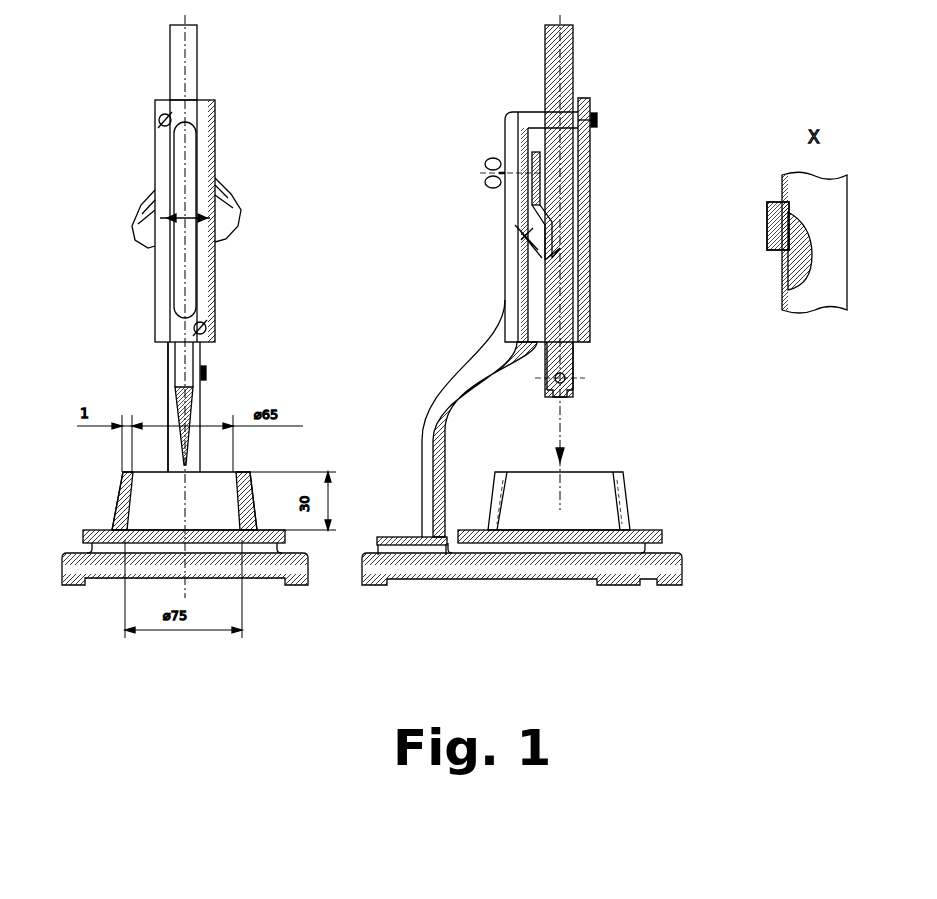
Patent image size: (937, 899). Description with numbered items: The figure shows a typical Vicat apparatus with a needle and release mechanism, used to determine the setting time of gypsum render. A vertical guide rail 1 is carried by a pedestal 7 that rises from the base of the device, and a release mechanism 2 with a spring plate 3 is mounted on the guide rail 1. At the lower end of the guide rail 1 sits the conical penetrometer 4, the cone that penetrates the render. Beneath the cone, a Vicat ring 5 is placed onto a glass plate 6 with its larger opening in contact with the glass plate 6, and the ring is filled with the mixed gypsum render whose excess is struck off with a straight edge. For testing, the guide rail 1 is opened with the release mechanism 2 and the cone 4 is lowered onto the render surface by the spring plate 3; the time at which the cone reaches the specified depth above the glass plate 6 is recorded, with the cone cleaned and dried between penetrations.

The guide rail 1 is at (190, 50).
The release mechanism 2 is at (237, 212).
The spring plate 3 is at (768, 227).
The conical penetrometer 4 is at (565, 458).
The Vicat ring 5 is at (615, 497).
The glass plate 6 is at (655, 537).
The pedestal 7 is at (440, 388).